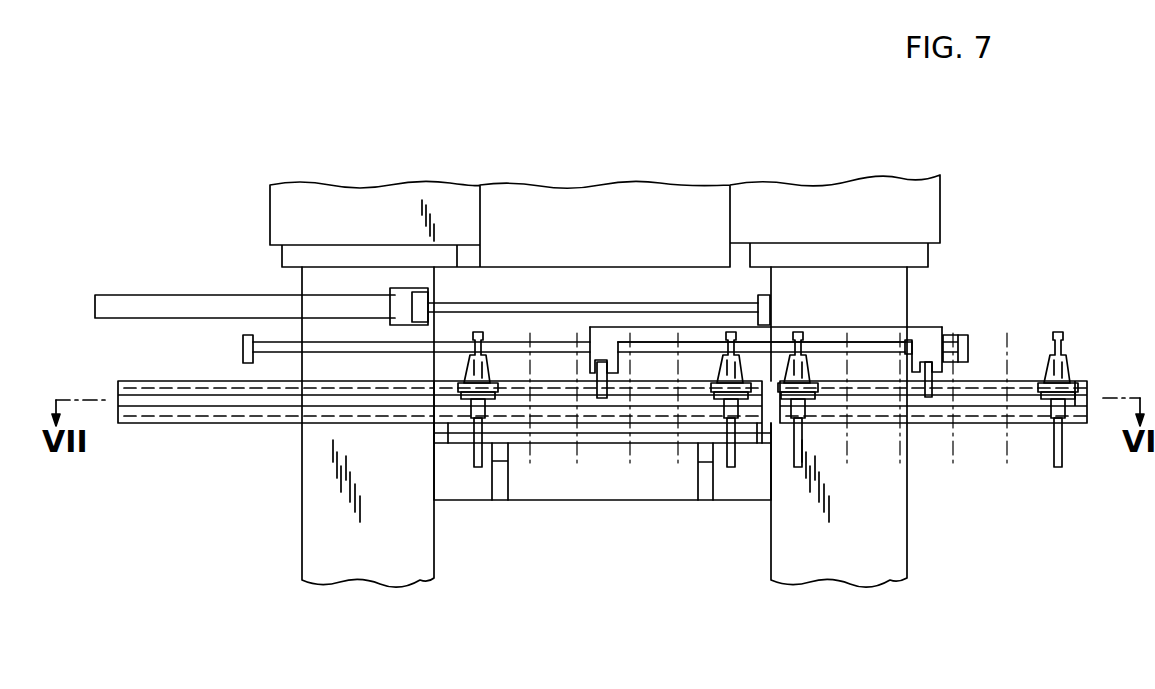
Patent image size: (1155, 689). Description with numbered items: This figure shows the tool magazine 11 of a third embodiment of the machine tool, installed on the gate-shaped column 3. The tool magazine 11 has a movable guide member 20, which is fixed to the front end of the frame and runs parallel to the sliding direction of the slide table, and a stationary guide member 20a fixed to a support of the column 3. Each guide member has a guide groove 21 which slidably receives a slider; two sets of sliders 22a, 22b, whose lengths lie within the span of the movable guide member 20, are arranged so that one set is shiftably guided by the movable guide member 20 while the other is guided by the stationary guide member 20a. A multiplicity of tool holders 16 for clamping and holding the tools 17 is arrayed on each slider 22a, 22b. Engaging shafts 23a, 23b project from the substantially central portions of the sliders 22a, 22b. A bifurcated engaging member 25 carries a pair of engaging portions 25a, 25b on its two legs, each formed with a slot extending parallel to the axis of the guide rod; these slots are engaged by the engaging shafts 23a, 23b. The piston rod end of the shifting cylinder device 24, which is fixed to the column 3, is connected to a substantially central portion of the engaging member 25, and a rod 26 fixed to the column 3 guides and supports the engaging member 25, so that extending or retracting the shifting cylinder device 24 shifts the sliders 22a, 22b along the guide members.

The column 3 is at (895, 297).
The tool magazine 11 is at (612, 473).
The tool holders 16 is at (747, 422).
The tools 17 is at (718, 360).
The movable guide member 20 is at (540, 422).
The stationary guide member 20a is at (187, 423).
The guide groove 21 is at (145, 405).
The slider 22a is at (508, 400).
The slider 22b is at (983, 403).
The engaging shaft 23a is at (595, 372).
The engaging shaft 23b is at (933, 357).
The shifting cylinder device 24 is at (158, 305).
The engaging member 25 is at (832, 330).
The engaging portion 25a is at (608, 337).
The engaging portion 25b is at (925, 347).
The rod 26 is at (345, 352).